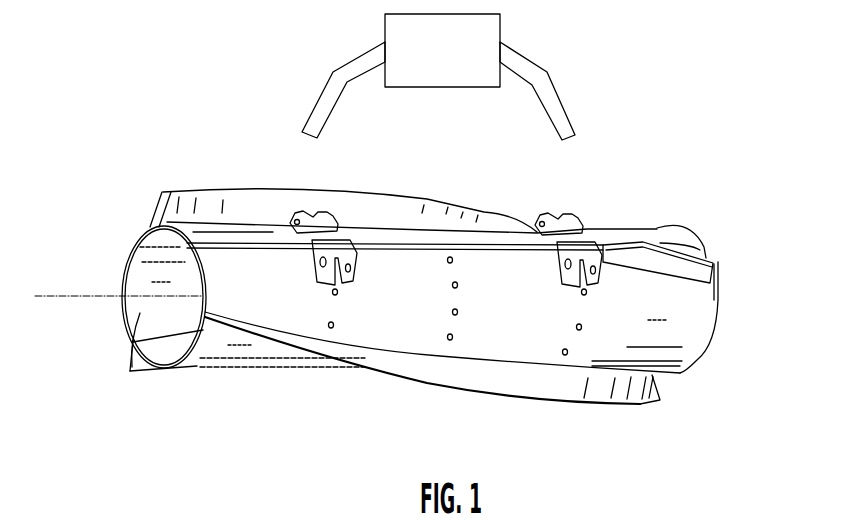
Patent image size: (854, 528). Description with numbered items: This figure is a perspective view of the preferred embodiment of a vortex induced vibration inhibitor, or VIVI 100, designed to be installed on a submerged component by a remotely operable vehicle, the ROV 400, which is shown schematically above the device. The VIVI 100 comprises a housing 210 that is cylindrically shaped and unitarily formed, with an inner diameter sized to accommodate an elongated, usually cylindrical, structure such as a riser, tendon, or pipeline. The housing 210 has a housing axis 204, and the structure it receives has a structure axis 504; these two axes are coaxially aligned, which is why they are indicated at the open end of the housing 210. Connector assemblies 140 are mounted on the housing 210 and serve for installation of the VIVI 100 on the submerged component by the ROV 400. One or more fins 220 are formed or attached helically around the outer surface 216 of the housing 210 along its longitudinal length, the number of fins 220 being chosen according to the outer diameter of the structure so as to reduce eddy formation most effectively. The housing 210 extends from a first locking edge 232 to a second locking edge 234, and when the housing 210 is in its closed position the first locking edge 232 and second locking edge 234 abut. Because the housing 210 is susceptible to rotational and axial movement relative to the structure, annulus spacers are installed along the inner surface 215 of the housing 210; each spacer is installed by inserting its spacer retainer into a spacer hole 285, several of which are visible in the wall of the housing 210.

The vortex induced vibration inhibitor 100 is at (233, 126).
The remotely operable vehicle 400 is at (460, 63).
The connector assemblies 140 is at (576, 195).
The housing axis 204 is at (86, 296).
The housing 210 is at (692, 318).
The inner surface 215 is at (140, 313).
The outer surface 216 is at (273, 233).
The fins 220 is at (210, 188).
The first locking edge 232 is at (662, 229).
The second locking edge 234 is at (710, 258).
The spacer hole 285 is at (333, 328).
The structure axis 504 is at (116, 300).